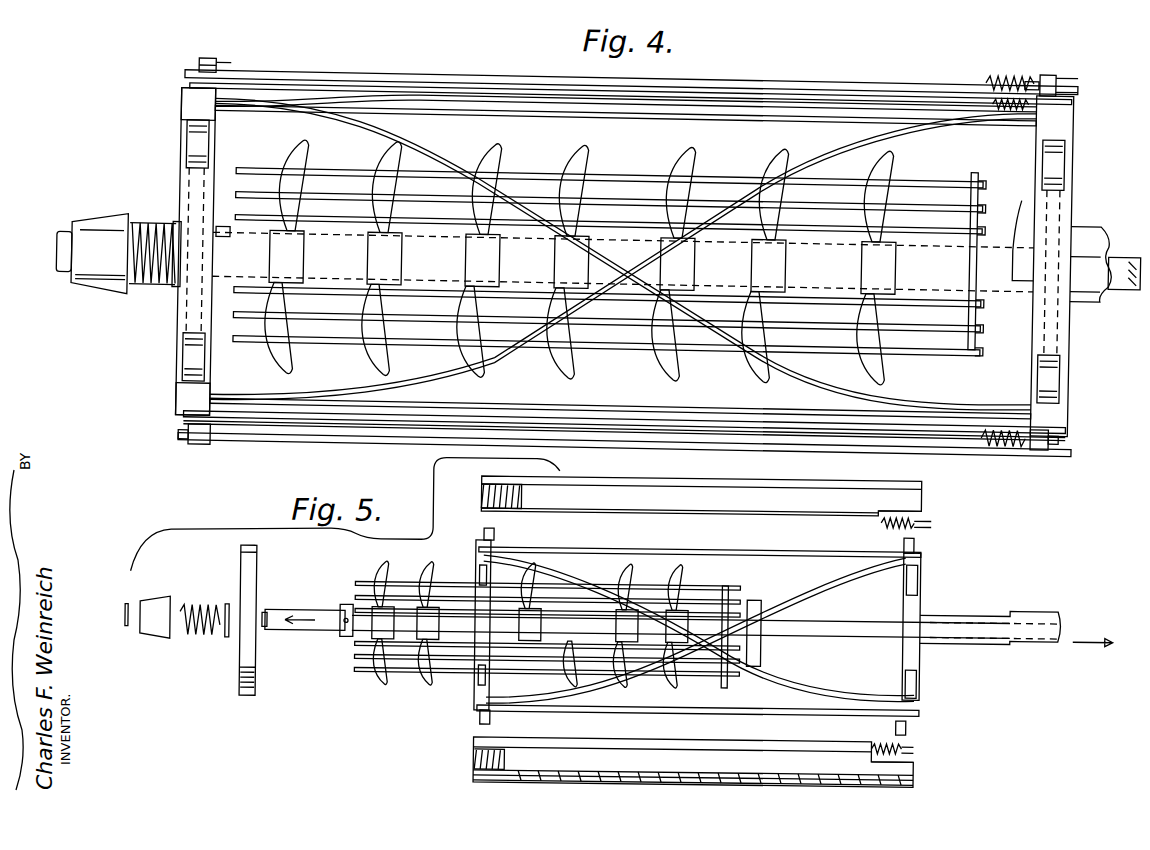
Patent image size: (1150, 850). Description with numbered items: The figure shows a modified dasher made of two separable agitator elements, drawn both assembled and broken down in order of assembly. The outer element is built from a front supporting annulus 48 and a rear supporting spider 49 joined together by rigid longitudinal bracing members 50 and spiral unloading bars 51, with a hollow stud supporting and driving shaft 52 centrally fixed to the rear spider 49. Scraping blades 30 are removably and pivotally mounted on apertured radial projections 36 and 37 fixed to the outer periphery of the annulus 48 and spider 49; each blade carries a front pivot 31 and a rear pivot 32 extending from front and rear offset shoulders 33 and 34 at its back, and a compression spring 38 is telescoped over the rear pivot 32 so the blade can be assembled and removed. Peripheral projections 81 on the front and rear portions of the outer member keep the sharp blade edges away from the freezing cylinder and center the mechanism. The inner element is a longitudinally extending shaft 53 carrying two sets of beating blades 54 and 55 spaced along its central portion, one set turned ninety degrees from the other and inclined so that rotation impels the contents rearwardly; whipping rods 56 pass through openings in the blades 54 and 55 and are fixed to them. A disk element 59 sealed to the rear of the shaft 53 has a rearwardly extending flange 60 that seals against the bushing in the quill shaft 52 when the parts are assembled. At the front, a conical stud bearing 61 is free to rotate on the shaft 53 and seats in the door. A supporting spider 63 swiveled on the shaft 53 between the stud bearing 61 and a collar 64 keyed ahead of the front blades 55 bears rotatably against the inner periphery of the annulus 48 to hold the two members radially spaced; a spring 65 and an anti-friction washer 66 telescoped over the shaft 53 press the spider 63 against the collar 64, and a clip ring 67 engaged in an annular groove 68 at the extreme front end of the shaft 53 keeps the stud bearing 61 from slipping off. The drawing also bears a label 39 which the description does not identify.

In FIG. 4, the scraping blade 30 is at (372, 69).
In FIG. 5, the scraping blade 30 is at (805, 498).
In FIG. 5, the front pivot 31 is at (480, 508).
In FIG. 4, the rear pivot 32 is at (1078, 68).
In FIG. 5, the rear pivot 32 is at (930, 519).
In FIG. 5, the front offset shoulder 33 is at (476, 762).
In FIG. 5, the rear offset shoulder 34 is at (878, 500).
In FIG. 4, the apertured radial projection 36 is at (208, 58).
In FIG. 5, the apertured radial projection 36 is at (482, 532).
In FIG. 4, the apertured radial projection 37 is at (1051, 59).
In FIG. 5, the apertured radial projection 37 is at (903, 540).
In FIG. 4, the compression spring 38 is at (1003, 62).
In FIG. 5, the compression spring 38 is at (912, 526).
In FIG. 4, the nut 39 is at (217, 61).
In FIG. 4, the front supporting annulus 48 is at (182, 187).
In FIG. 5, the front supporting annulus 48 is at (478, 704).
In FIG. 4, the rear supporting spider 49 is at (1066, 118).
In FIG. 5, the rear supporting spider 49 is at (920, 600).
In FIG. 4, the longitudinal bracing member 50 is at (610, 108).
In FIG. 5, the longitudinal bracing member 50 is at (677, 548).
In FIG. 4, the spiral unloading bar 51 is at (435, 362).
In FIG. 5, the spiral unloading bar 51 is at (805, 585).
In FIG. 4, the hollow stud supporting and driving shaft 52 is at (1103, 210).
In FIG. 5, the hollow stud supporting and driving shaft 52 is at (985, 610).
In FIG. 4, the shaft 53 is at (1124, 272).
In FIG. 5, the shaft 53 is at (348, 612).
In FIG. 4, the beating blade 54 is at (422, 362).
In FIG. 5, the beating blade 54 is at (534, 578).
In FIG. 4, the beating blade 55 is at (303, 350).
In FIG. 5, the beating blade 55 is at (578, 592).
In FIG. 4, the whipping rod 56 is at (345, 203).
In FIG. 5, the whipping rod 56 is at (725, 588).
In FIG. 4, the disk element 59 is at (1023, 191).
In FIG. 5, the rearwardly extending flange 60 is at (753, 597).
In FIG. 4, the conical stud bearing 61 is at (80, 238).
In FIG. 5, the conical stud bearing 61 is at (155, 640).
In FIG. 4, the supporting spider 63 is at (185, 92).
In FIG. 5, the supporting spider 63 is at (256, 676).
In FIG. 4, the collar 64 is at (216, 226).
In FIG. 5, the collar 64 is at (344, 606).
In FIG. 4, the spring 65 is at (157, 287).
In FIG. 5, the spring 65 is at (198, 608).
In FIG. 4, the anti-friction washer 66 is at (178, 289).
In FIG. 5, the anti-friction washer 66 is at (227, 642).
In FIG. 4, the clip ring 67 is at (64, 260).
In FIG. 5, the clip ring 67 is at (125, 630).
In FIG. 5, the annular groove 68 is at (268, 612).
In FIG. 4, the peripheral projection 81 is at (195, 150).
In FIG. 5, the peripheral projection 81 is at (918, 575).